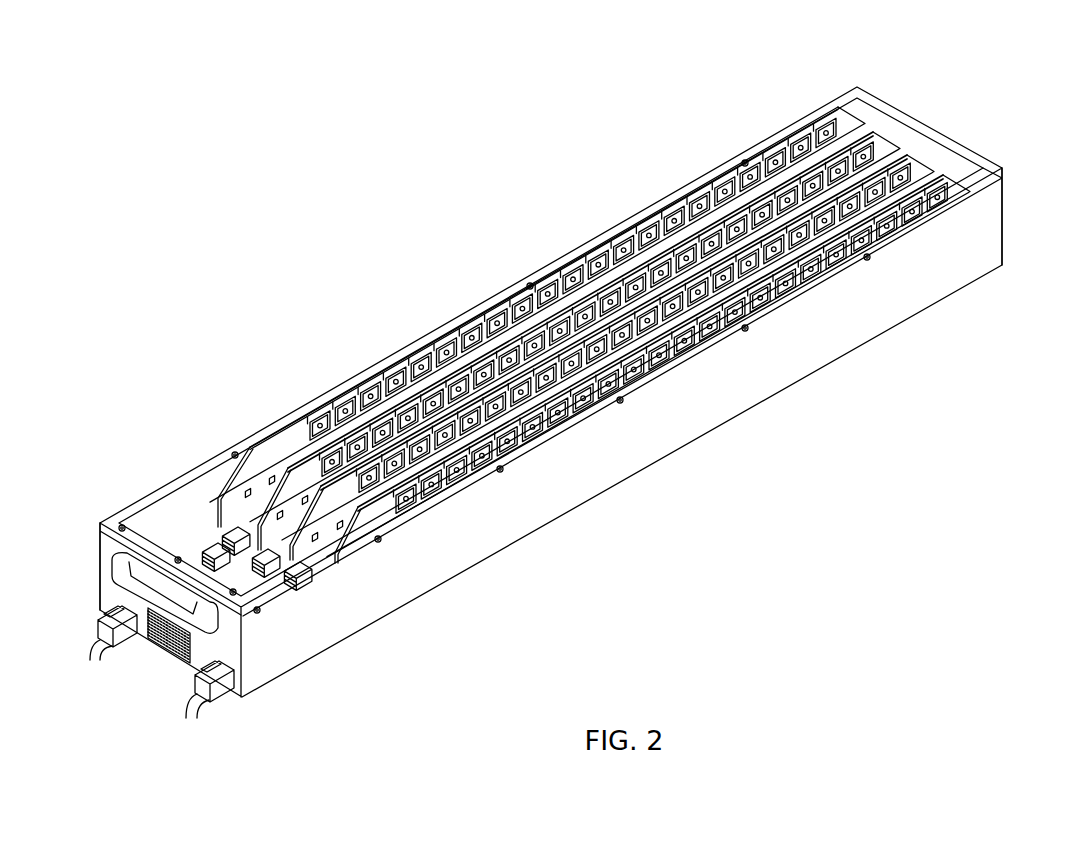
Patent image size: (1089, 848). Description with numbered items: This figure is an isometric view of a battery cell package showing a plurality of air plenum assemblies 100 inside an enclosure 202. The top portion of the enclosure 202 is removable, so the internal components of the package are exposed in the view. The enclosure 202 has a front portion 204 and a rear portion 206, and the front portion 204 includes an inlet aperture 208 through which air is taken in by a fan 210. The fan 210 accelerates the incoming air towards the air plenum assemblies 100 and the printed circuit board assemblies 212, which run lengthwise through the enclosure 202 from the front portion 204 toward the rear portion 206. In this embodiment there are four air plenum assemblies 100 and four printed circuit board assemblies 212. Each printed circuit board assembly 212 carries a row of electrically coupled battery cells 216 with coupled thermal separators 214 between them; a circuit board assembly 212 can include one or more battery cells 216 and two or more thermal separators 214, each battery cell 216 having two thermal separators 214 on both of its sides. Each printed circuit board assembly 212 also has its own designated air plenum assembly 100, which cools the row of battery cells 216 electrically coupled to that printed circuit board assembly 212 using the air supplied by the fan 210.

The air plenum assembly 100 is at (962, 185).
The enclosure 202 is at (820, 352).
The front portion 204 is at (104, 549).
The rear portion 206 is at (1004, 224).
The inlet aperture 208 is at (163, 650).
The fan 210 is at (197, 565).
The printed circuit board assembly 212 is at (353, 535).
The thermal separator 214 is at (405, 362).
The battery cell 216 is at (690, 190).